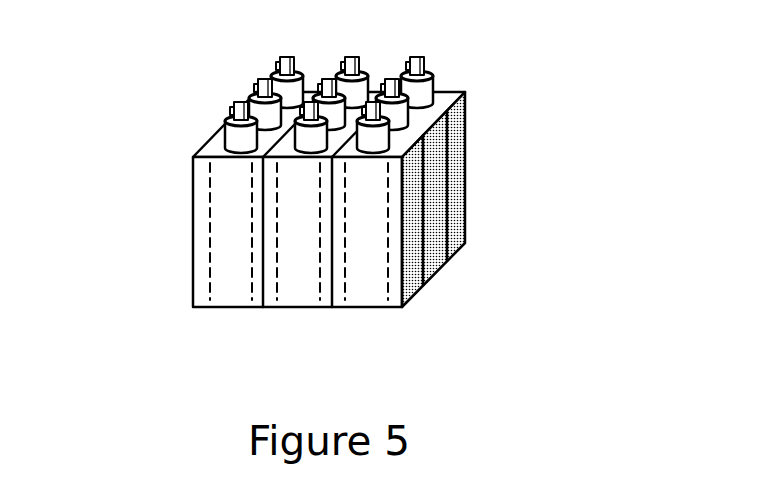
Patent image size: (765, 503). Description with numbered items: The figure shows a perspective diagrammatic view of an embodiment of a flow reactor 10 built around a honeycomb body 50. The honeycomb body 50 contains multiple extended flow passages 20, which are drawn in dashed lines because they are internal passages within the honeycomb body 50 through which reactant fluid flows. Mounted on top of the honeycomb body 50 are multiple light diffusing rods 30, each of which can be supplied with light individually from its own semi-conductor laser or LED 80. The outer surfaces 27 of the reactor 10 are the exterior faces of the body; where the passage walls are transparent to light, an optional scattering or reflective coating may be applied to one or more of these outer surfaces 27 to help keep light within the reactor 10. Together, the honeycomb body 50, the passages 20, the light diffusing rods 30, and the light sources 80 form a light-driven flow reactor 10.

The flow reactor 10 is at (295, 212).
The extended flow passage 20 is at (227, 268).
The outer surface 27 is at (432, 203).
The light diffusing rod 30 is at (225, 138).
The honeycomb body 50 is at (163, 212).
The semi-conductor laser or LED 80 is at (258, 92).